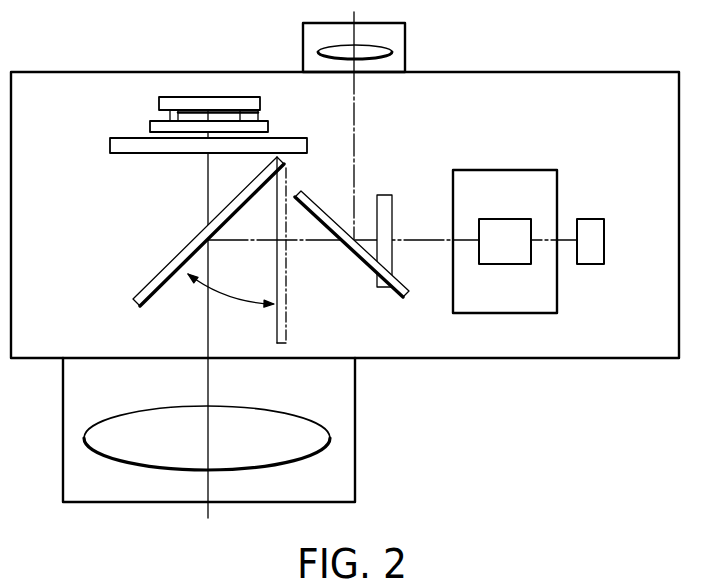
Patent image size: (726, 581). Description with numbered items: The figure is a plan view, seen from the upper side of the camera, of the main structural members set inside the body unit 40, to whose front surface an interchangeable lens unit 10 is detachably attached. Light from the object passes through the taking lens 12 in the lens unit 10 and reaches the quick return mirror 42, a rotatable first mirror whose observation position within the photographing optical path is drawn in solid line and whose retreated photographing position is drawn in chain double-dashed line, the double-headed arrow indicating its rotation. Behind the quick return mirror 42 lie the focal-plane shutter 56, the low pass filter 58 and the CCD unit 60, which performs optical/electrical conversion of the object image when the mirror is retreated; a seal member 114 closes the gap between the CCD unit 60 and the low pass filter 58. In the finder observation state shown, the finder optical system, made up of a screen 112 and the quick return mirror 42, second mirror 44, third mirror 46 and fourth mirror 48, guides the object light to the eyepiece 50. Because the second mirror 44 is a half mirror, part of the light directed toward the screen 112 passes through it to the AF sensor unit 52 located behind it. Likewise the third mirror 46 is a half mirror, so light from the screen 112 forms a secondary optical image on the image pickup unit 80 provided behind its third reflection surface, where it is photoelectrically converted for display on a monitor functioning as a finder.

The lens unit 10 is at (369, 488).
The taking lens 12 is at (280, 412).
The body unit 40 is at (627, 72).
The quick return mirror 42 is at (158, 272).
The second mirror 44 is at (557, 286).
The third mirror 46 is at (544, 241).
The fourth mirror 48 is at (349, 248).
The eyepiece 50 is at (392, 52).
The AF sensor unit 52 is at (592, 219).
The focal-plane shutter 56 is at (127, 137).
The low pass filter 58 is at (152, 120).
The CCD unit 60 is at (190, 97).
The image pickup unit 80 is at (503, 219).
The screen 112 is at (383, 195).
The seal member 114 is at (258, 114).